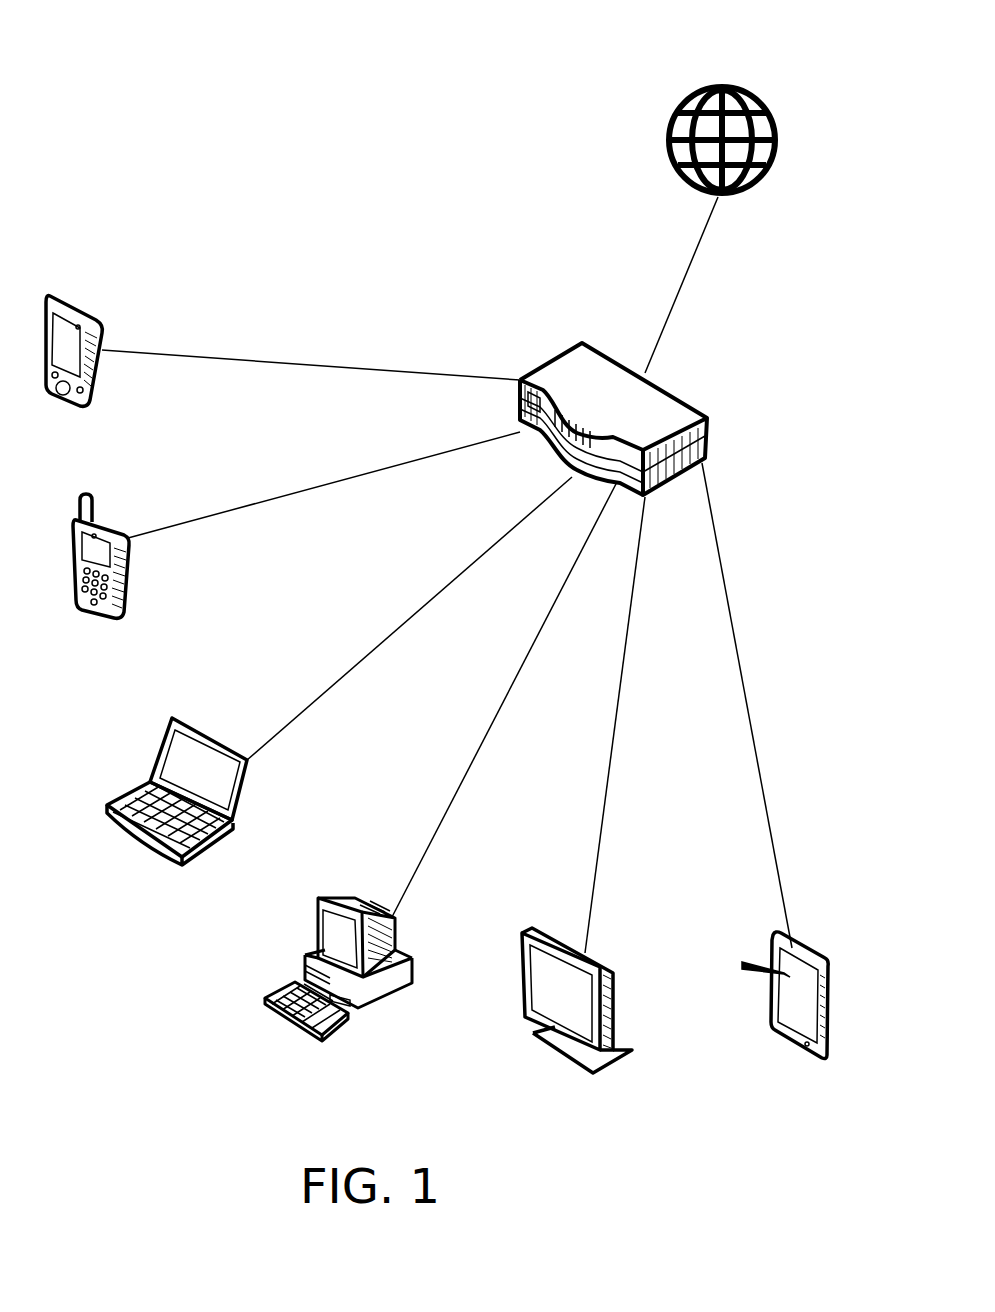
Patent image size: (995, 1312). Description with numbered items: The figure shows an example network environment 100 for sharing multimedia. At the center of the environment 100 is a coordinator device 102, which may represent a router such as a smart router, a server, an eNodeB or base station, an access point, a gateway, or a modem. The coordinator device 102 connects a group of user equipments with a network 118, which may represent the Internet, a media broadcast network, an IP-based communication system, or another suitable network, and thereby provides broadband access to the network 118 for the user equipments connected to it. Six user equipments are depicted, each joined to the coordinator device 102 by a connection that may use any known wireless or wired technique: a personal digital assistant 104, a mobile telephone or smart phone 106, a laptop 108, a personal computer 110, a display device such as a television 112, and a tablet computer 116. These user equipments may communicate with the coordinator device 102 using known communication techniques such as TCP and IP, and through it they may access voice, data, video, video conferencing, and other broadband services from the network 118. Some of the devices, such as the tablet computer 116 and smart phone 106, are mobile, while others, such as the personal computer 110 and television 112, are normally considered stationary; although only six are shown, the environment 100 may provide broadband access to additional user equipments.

The network environment 100 is at (363, 204).
The coordinator device 102 is at (540, 363).
The personal digital assistant 104 is at (102, 322).
The mobile telephone or smart phone 106 is at (128, 538).
The laptop 108 is at (200, 733).
The personal computer 110 is at (332, 897).
The television 112 is at (598, 960).
The tablet computer 116 is at (817, 950).
The network 118 is at (710, 85).